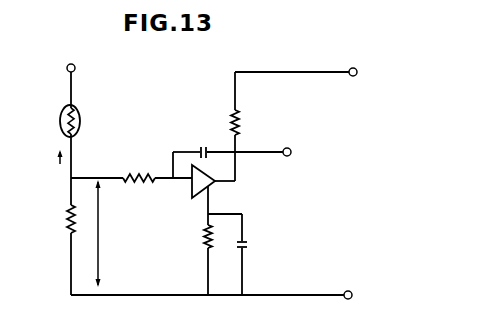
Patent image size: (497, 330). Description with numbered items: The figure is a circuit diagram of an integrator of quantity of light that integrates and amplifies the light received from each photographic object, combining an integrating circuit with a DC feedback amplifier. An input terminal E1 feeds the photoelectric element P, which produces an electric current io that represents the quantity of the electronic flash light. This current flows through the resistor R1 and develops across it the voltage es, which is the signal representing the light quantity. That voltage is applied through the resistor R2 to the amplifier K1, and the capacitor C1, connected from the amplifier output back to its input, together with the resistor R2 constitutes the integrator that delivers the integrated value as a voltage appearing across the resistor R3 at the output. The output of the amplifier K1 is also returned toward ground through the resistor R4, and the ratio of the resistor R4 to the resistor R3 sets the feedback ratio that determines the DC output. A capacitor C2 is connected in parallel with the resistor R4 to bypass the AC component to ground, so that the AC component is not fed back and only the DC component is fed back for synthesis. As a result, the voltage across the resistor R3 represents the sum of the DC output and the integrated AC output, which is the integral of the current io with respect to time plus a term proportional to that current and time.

The input voltage terminal E1 is at (60, 72).
The photoelectric element P is at (61, 121).
The output current io is at (52, 158).
The resistor R1 is at (58, 219).
The voltage across resistor es is at (100, 233).
The resistor R2 is at (139, 191).
The amplifier K1 is at (290, 78).
The capacitor C1 is at (205, 144).
The resistor R3 is at (244, 123).
The resistor R4 is at (198, 240).
The capacitor C2 is at (252, 246).